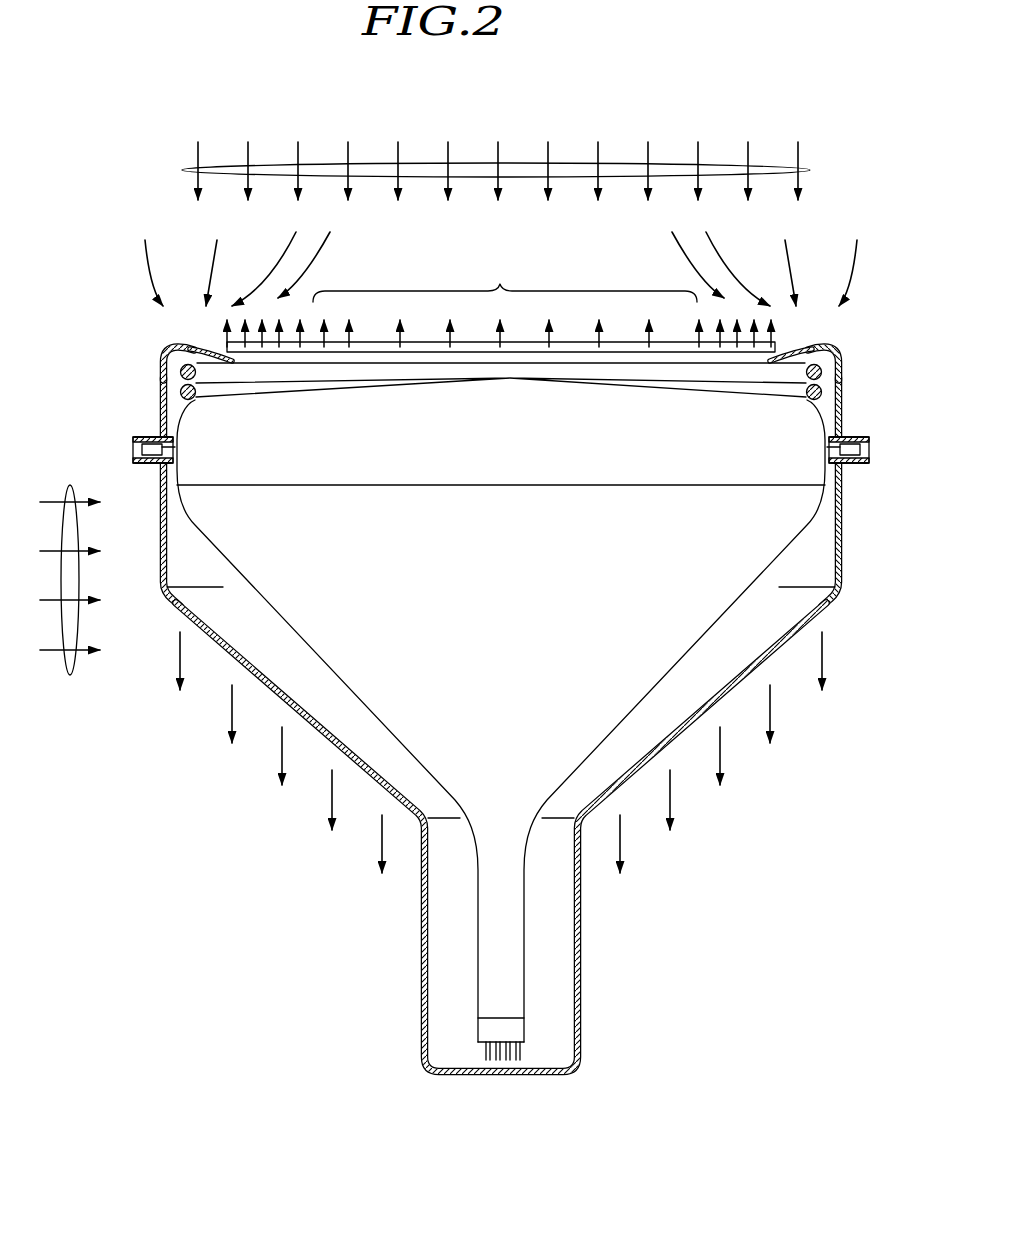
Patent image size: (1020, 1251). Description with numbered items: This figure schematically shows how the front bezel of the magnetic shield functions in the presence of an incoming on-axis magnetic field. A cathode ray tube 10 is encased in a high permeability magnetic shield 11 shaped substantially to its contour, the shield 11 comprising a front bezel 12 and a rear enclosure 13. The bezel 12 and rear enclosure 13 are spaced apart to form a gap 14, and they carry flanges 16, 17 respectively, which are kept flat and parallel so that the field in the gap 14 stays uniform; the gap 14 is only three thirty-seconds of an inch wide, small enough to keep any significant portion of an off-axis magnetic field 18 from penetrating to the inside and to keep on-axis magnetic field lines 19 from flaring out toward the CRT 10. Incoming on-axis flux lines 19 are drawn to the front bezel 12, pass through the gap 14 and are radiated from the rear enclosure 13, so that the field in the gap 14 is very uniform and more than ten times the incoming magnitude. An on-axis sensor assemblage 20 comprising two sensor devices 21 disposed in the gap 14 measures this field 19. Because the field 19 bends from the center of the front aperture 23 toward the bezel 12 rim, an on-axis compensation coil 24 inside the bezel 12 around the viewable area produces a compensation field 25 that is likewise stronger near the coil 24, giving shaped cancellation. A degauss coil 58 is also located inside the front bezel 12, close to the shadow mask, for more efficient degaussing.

The cathode ray tube 10 is at (528, 960).
The magnetic shield 11 is at (907, 612).
The front bezel 12 is at (160, 362).
The rear enclosure 13 is at (688, 752).
The gap 14 is at (131, 447).
The flange 16 is at (150, 437).
The flange 17 is at (145, 465).
The off-axis magnetic field 18 is at (72, 675).
The on-axis magnetic field 19 is at (812, 170).
The on-axis sensor assemblage 20 is at (118, 436).
The sensor device 21 is at (168, 447).
The front aperture 23 is at (500, 284).
The on-axis compensation coil 24 is at (172, 350).
The on-axis compensation field 25 is at (790, 345).
The degauss coil 58 is at (181, 385).